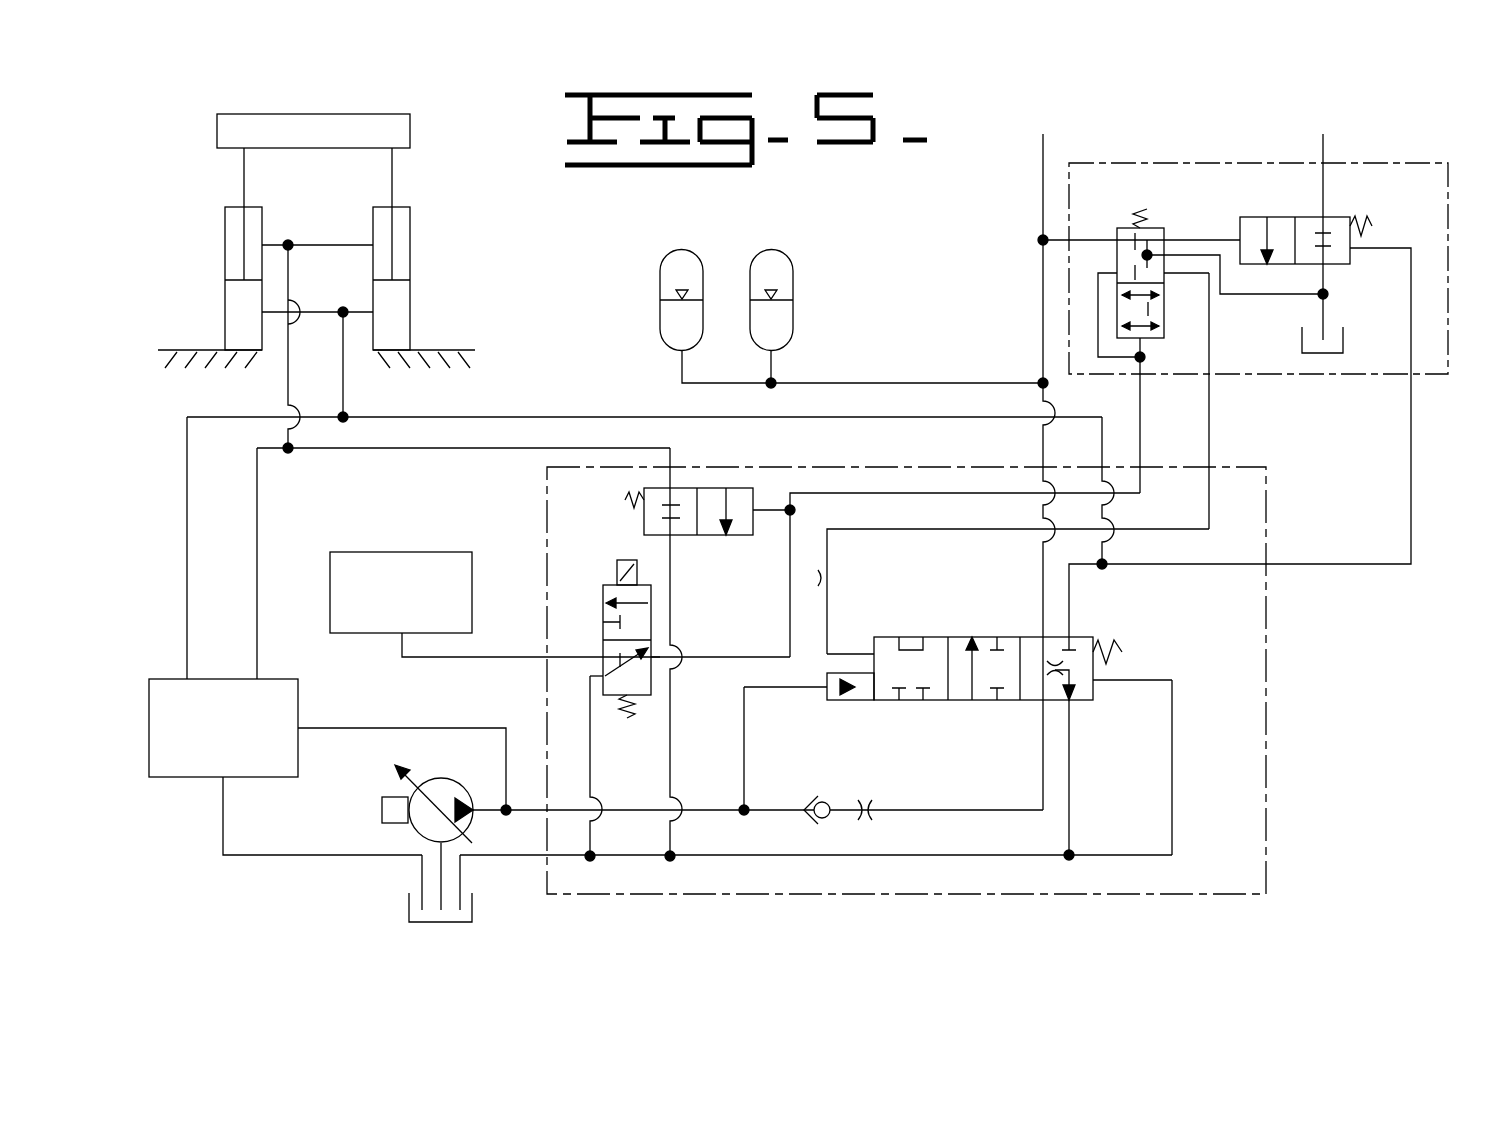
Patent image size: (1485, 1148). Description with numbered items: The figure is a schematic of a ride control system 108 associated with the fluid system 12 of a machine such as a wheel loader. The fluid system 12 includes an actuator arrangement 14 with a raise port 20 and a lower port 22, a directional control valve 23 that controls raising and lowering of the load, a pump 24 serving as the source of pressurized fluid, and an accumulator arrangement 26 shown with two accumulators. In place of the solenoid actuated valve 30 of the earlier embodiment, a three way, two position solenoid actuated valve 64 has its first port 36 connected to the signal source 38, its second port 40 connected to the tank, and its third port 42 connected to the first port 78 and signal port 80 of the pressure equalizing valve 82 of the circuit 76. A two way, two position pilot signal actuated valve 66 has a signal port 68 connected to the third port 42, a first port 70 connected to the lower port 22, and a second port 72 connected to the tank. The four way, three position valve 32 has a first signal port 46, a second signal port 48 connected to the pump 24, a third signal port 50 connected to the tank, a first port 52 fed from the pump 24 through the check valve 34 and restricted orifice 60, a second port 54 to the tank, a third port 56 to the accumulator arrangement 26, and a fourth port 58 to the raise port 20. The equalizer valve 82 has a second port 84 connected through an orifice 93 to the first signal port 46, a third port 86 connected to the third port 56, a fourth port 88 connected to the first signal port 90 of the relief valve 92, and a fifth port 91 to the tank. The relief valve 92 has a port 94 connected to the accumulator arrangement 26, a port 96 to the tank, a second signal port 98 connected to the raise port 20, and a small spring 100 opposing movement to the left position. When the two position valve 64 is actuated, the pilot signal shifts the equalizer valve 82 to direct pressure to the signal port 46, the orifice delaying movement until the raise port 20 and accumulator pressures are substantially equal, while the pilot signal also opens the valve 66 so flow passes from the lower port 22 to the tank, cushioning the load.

The fluid system 12 is at (1040, 921).
The actuator arrangement 14 is at (420, 241).
The raise port 20 is at (320, 312).
The lower port 22 is at (322, 246).
The directional control valve 23 is at (300, 700).
The pump 24 is at (442, 770).
The accumulator arrangement 26 is at (802, 270).
The solenoid actuated valve 30 is at (640, 712).
The three position valve 32 is at (1097, 690).
The check valve 34 is at (812, 797).
The first port 36 is at (603, 650).
The signal source 38 is at (378, 552).
The second port 40 is at (590, 770).
The third port 42 is at (648, 652).
The first signal port 46 is at (855, 653).
The second signal port 48 is at (850, 700).
The third signal port 50 is at (1145, 680).
The first port 52 is at (1040, 745).
The second port 54 is at (1069, 780).
The third port 56 is at (1040, 585).
The fourth port 58 is at (1069, 605).
The restricted orifice 60 is at (872, 806).
The two position solenoid actuated valve 64 is at (614, 572).
The two position pilot signal actuated valve 66 is at (740, 537).
The signal port 68 is at (760, 508).
The first port 70 is at (680, 490).
The second port 72 is at (672, 537).
The circuit 76 is at (1441, 378).
The first port 78 is at (1112, 368).
The signal port 80 is at (1142, 357).
The equalizer valve 82 is at (1150, 222).
The second port 84 is at (1209, 315).
The third port 86 is at (1095, 240).
The fourth port 88 is at (1170, 240).
The first signal port 90 is at (1230, 244).
The fifth port 91 is at (1152, 255).
The relief valve 92 is at (1335, 217).
The orifice 93 is at (830, 590).
The port 94 is at (1322, 200).
The port 96 is at (1322, 310).
The second signal port 98 is at (1392, 252).
The small spring 100 is at (1372, 228).
The ride control system 108 is at (1276, 779).